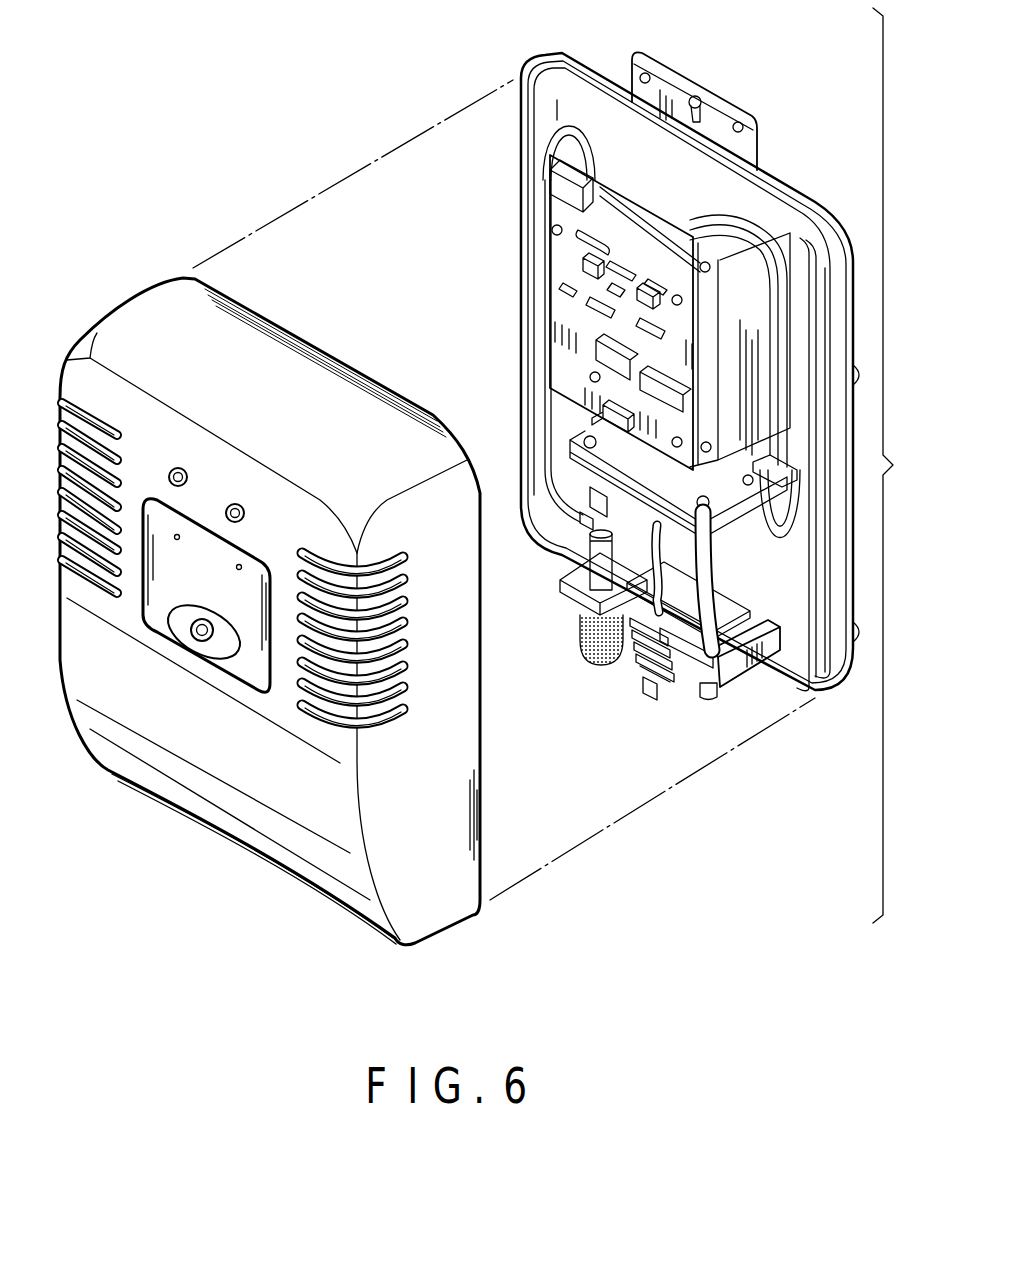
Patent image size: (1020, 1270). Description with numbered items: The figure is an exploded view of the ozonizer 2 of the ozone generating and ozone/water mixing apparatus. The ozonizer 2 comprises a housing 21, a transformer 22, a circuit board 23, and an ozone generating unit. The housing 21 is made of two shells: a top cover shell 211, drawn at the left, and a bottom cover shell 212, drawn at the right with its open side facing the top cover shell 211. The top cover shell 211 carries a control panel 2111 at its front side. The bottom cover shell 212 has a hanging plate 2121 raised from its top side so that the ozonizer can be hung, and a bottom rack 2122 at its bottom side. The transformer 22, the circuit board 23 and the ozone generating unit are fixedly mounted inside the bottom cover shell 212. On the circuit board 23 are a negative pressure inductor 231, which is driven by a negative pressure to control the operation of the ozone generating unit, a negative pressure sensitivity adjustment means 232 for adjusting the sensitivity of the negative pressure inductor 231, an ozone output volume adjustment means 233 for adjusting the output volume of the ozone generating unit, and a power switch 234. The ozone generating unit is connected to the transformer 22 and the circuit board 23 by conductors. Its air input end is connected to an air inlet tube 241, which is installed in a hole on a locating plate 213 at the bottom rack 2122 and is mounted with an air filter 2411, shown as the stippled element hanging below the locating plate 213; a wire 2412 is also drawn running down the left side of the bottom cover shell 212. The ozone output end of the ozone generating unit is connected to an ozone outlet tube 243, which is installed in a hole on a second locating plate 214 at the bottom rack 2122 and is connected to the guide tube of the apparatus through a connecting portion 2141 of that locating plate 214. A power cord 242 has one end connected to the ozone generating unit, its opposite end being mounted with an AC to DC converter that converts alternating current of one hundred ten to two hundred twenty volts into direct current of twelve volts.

The ozonizer 2 is at (330, 147).
The housing 21 is at (180, 267).
The top cover shell 211 is at (165, 318).
The control panel 2111 is at (240, 673).
The bottom cover shell 212 is at (588, 80).
The hanging plate 2121 is at (672, 83).
The bottom rack 2122 is at (737, 680).
The locating plate 213 is at (590, 593).
The locating plate 214 is at (680, 672).
The connecting portion 2141 is at (703, 697).
The transformer 22 is at (722, 206).
The circuit board 23 is at (562, 248).
The negative pressure inductor 231 is at (560, 188).
The negative pressure sensitivity adjustment means 232 is at (582, 267).
The ozone output volume adjustment means 233 is at (637, 297).
The power switch 234 is at (610, 420).
The air inlet tube 241 is at (587, 550).
The air filter 2411 is at (580, 647).
The sensor wire 2412 is at (540, 342).
The power cord 242 is at (647, 680).
The ozone outlet tube 243 is at (718, 590).